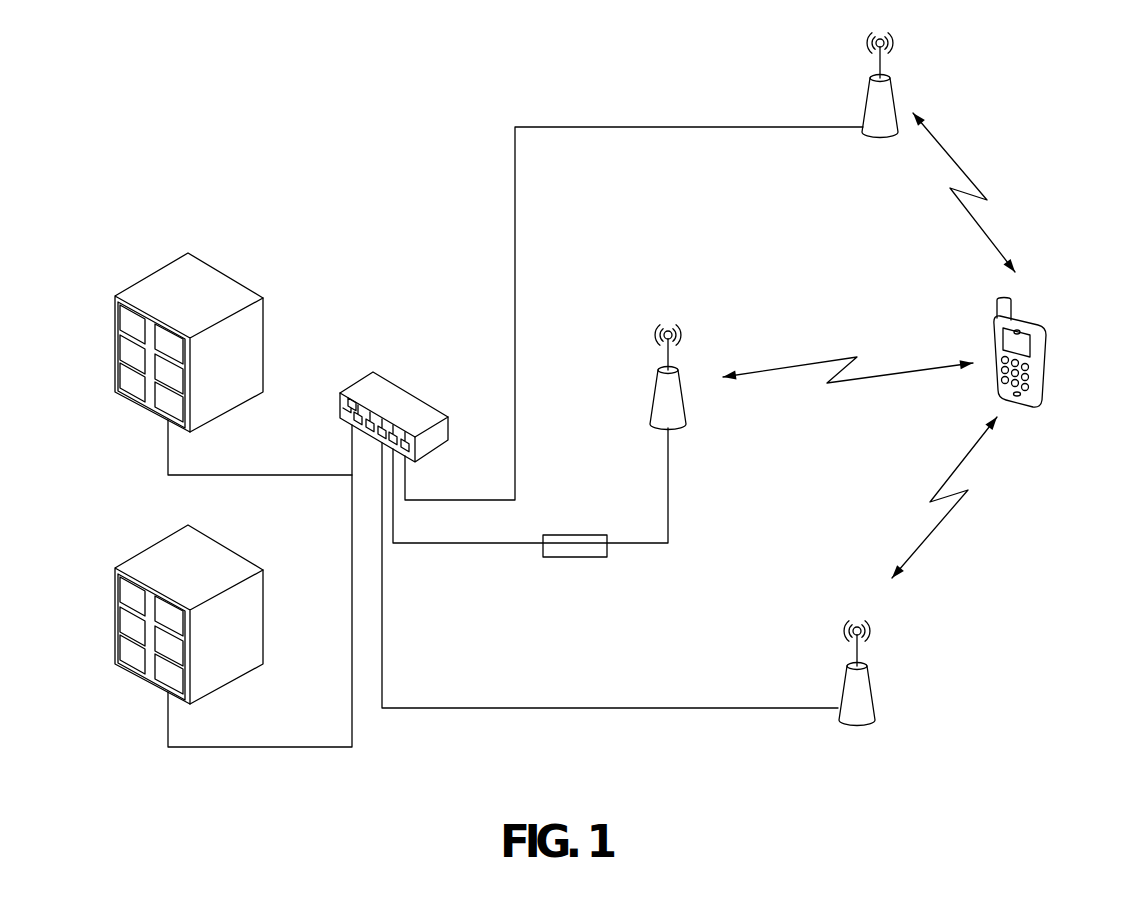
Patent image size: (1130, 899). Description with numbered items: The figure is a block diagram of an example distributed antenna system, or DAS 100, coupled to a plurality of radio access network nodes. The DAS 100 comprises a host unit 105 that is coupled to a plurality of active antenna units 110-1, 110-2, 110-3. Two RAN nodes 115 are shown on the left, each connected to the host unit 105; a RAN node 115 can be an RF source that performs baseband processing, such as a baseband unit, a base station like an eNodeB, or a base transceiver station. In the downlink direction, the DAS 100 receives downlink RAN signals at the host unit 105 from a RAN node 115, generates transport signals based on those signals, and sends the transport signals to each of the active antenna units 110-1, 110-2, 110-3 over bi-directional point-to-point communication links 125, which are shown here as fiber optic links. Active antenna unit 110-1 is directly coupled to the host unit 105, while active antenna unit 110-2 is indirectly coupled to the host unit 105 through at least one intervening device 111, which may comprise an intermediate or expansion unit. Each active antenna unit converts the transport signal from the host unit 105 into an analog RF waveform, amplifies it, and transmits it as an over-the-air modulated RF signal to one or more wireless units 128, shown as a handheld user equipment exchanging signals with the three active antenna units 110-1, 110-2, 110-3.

The distributed antenna system (DAS) 100 is at (378, 96).
The host unit 105 is at (452, 428).
The active antenna unit 110-1 is at (892, 92).
The active antenna unit 110-2 is at (682, 385).
The active antenna unit 110-3 is at (870, 680).
The intervening device 111 is at (555, 535).
The RAN node 115 is at (113, 337).
The communication link 125 is at (585, 127).
The wireless unit 128 is at (1050, 350).